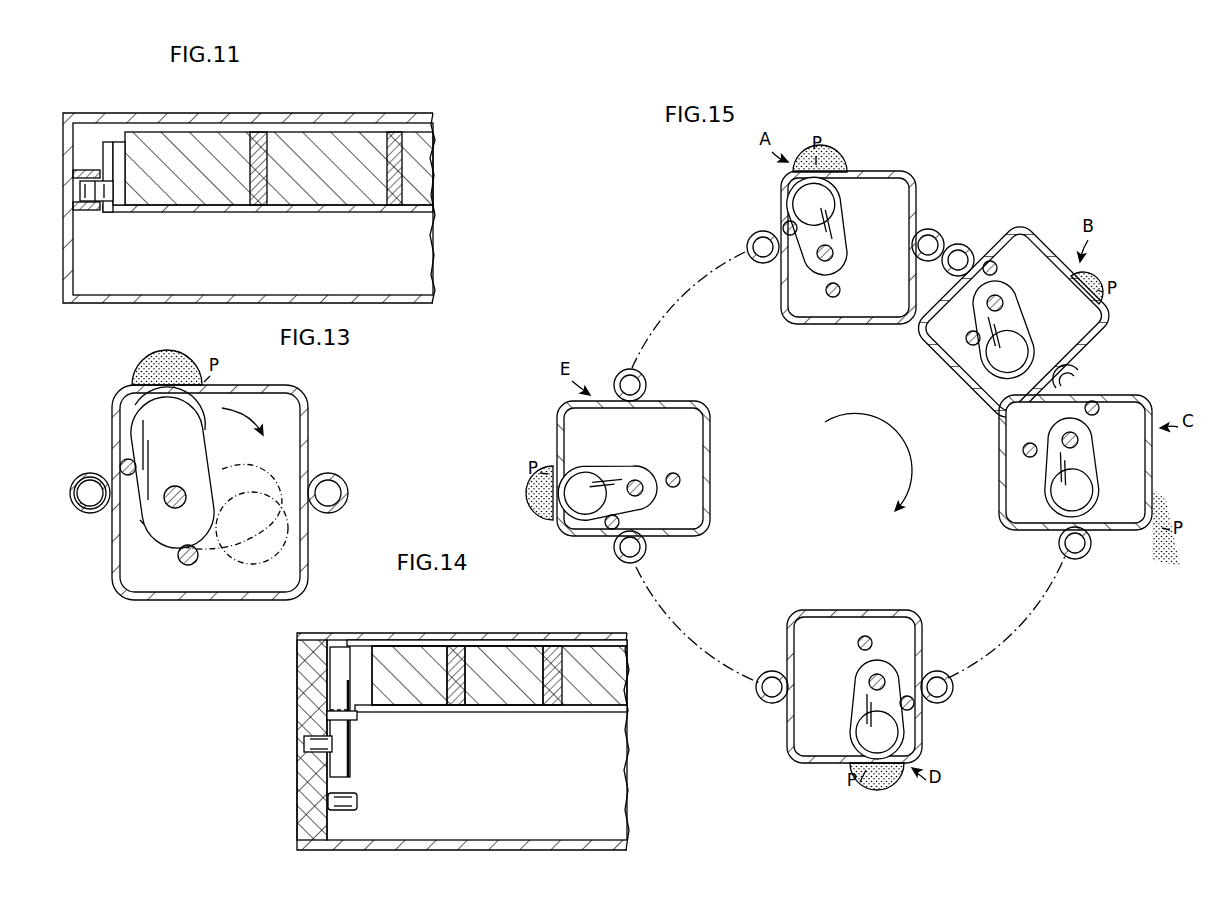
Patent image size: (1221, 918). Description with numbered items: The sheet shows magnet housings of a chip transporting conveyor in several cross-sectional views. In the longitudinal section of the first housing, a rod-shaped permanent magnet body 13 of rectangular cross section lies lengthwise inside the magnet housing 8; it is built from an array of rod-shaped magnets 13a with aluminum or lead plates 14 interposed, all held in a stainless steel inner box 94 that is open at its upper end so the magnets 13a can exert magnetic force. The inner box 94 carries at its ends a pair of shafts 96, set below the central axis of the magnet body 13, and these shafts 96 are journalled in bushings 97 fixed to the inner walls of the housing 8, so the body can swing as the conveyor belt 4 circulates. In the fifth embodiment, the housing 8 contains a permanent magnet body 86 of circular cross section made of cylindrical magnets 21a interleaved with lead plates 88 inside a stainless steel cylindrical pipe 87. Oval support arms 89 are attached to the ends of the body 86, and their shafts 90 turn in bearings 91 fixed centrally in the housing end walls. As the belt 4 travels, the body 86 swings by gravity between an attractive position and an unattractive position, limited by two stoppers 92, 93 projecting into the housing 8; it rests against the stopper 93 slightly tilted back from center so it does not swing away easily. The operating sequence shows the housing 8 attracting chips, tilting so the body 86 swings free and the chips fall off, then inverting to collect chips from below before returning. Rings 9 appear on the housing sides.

In FIG. 15, the conveyor belt 4 is at (680, 292).
In FIG. 11, the magnet housing 8 is at (285, 113).
In FIG. 13, the magnet housing 8 is at (253, 386).
In FIG. 14, the magnet housing 8 is at (488, 633).
In FIG. 15, the magnet housing 8 is at (550, 429).
In FIG. 13, the ring 9 is at (92, 474).
In FIG. 11, the permanent magnet body 13 is at (128, 212).
In FIG. 11, the rod-shaped magnets 13a is at (205, 207).
In FIG. 11, the aluminum or lead plates 14 is at (258, 207).
In FIG. 14, the cylindrical magnets 21a is at (400, 707).
In FIG. 13, the permanent magnet body 86 is at (205, 420).
In FIG. 14, the permanent magnet body 86 is at (436, 707).
In FIG. 15, the permanent magnet body 86 is at (583, 467).
In FIG. 13, the cylindrical pipe 87 is at (205, 440).
In FIG. 14, the cylindrical pipe 87 is at (535, 707).
In FIG. 14, the lead plates 88 is at (461, 707).
In FIG. 13, the support arms 89 is at (207, 470).
In FIG. 14, the support arms 89 is at (352, 760).
In FIG. 15, the support arms 89 is at (631, 466).
In FIG. 13, the shafts 90 is at (173, 508).
In FIG. 14, the shafts 90 is at (304, 742).
In FIG. 15, the shafts 90 is at (622, 492).
In FIG. 14, the bearings 91 is at (297, 760).
In FIG. 13, the stopper 92 is at (190, 565).
In FIG. 14, the stopper 92 is at (357, 801).
In FIG. 15, the stopper 92 is at (673, 473).
In FIG. 13, the stopper 93 is at (128, 477).
In FIG. 14, the stopper 93 is at (356, 721).
In FIG. 15, the stopper 93 is at (628, 521).
In FIG. 11, the inner box 94 is at (170, 212).
In FIG. 11, the shafts 96 is at (98, 203).
In FIG. 11, the bushings 97 is at (95, 171).